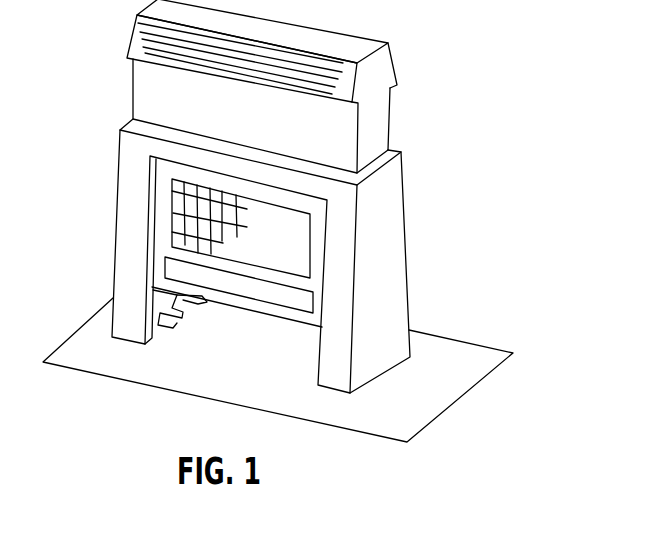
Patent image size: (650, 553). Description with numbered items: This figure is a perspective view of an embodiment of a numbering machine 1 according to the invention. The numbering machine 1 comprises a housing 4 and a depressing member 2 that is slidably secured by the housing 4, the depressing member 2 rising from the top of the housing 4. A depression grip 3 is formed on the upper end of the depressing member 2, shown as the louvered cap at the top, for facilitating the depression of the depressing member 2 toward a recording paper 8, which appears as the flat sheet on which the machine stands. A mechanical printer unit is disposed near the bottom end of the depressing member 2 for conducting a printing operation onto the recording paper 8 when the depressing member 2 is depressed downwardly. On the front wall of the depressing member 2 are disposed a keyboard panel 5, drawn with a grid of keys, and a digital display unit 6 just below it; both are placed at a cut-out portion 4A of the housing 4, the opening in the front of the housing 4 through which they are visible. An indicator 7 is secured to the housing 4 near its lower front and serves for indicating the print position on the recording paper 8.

The numbering machine 1 is at (425, 248).
The depressing member 2 is at (383, 137).
The depression grip 3 is at (395, 62).
The housing 4 is at (402, 172).
The cut-out portion 4A is at (150, 197).
The keyboard panel 5 is at (280, 257).
The digital display unit 6 is at (294, 303).
The indicator 7 is at (175, 328).
The recording paper 8 is at (473, 373).